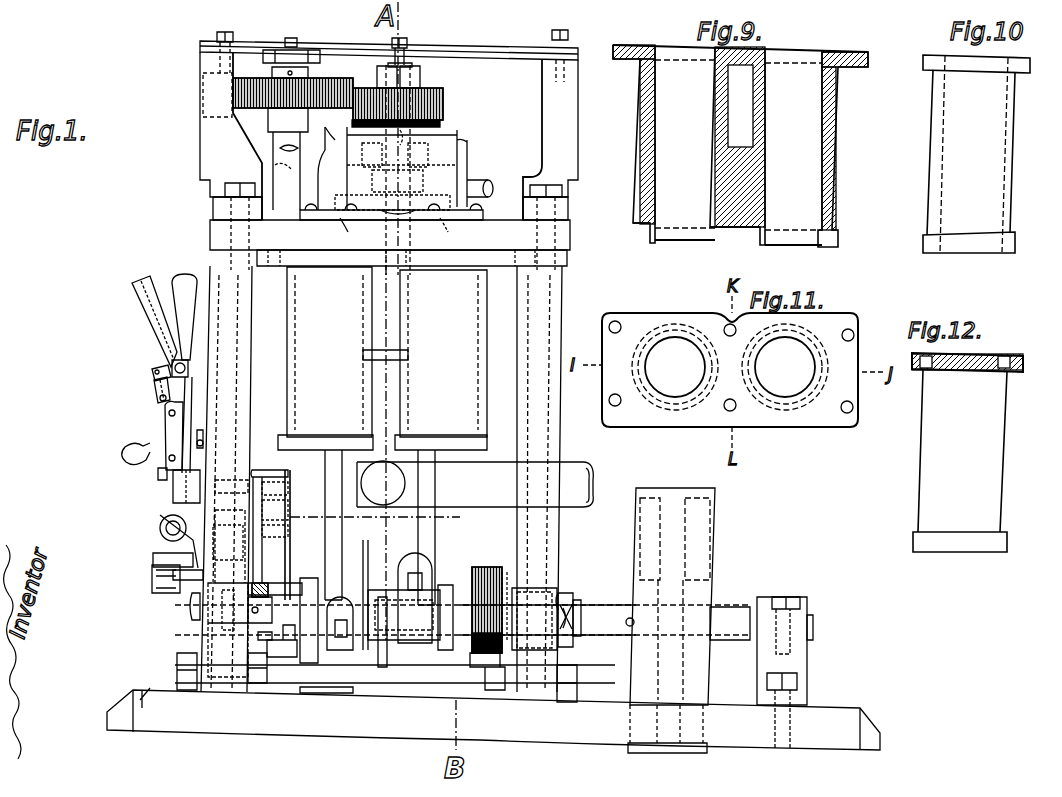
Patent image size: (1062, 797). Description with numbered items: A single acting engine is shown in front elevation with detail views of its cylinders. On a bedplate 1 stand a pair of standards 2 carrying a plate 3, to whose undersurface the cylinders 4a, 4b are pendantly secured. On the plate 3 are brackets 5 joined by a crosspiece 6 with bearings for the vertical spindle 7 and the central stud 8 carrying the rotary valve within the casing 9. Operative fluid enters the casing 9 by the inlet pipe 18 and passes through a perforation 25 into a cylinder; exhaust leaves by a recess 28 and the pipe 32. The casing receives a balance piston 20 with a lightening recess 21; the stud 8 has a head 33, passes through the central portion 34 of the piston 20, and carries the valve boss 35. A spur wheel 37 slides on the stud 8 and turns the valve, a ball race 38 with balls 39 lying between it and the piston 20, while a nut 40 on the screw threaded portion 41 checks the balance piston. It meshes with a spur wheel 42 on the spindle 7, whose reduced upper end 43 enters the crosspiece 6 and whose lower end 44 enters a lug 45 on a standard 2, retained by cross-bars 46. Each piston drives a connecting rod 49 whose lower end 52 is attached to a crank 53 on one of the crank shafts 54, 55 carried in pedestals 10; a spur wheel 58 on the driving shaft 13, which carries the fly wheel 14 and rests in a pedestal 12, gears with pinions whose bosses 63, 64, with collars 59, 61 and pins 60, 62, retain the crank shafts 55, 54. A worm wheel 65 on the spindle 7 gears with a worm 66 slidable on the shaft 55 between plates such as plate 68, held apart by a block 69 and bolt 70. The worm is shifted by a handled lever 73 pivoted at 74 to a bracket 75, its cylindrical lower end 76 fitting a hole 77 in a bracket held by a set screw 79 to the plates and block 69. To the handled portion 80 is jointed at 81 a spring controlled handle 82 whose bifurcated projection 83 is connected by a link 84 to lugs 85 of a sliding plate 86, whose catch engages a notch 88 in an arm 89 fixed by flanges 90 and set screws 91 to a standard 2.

In FIG. 1, the bedplate 1 is at (880, 735).
In FIG. 1, the standards 2 is at (381, 496).
In FIG. 1, the plate 3 is at (217, 232).
In FIG. 1, the cylinder 4a is at (325, 358).
In FIG. 9, the cylinder 4a is at (664, 144).
In FIG. 10, the cylinder 4a is at (976, 154).
In FIG. 1, the cylinder 4b is at (441, 360).
In FIG. 9, the cylinder 4b is at (789, 147).
In FIG. 12, the cylinder 4b is at (967, 452).
In FIG. 1, the brackets 5 is at (389, 136).
In FIG. 1, the crosspiece 6 is at (240, 42).
In FIG. 1, the vertical spindle 7 is at (294, 190).
In FIG. 1, the pin or stud 8 is at (408, 40).
In FIG. 1, the valve casing 9 is at (318, 182).
In FIG. 1, the pedestals 10 is at (227, 618).
In FIG. 1, the third pedestal 12 is at (768, 600).
In FIG. 1, the shaft 13 is at (730, 623).
In FIG. 1, the fly wheel 14 is at (673, 490).
In FIG. 1, the inlet pipe 18 is at (490, 192).
In FIG. 1, the balance piston 20 is at (352, 158).
In FIG. 1, the circular recess 21 is at (395, 155).
In FIG. 1, the perforation 25 is at (347, 234).
In FIG. 1, the recess 28 is at (457, 232).
In FIG. 1, the pipe 32 is at (366, 394).
In FIG. 1, the head 33 is at (398, 224).
In FIG. 1, the central portion 34 is at (407, 133).
In FIG. 1, the boss 35 is at (404, 181).
In FIG. 1, the spur wheel 37 is at (443, 108).
In FIG. 1, the ball race 38 is at (440, 126).
In FIG. 1, the balls 39 is at (329, 124).
In FIG. 1, the nut 40 is at (420, 76).
In FIG. 1, the screw threaded portion 41 is at (412, 66).
In FIG. 1, the spur wheel 42 is at (322, 82).
In FIG. 1, the upper end 43 is at (291, 37).
In FIG. 1, the lower end 44 is at (267, 668).
In FIG. 1, the lug 45 is at (282, 641).
In FIG. 1, the bolts or cross-bars 46 is at (182, 663).
In FIG. 1, the connecting rod 49 is at (335, 518).
In FIG. 1, the lower end 52 is at (434, 622).
In FIG. 1, the cranks 53 is at (380, 595).
In FIG. 1, the crank shaft 54 is at (165, 632).
In FIG. 1, the crank shaft 55 is at (588, 640).
In FIG. 1, the spur wheel 58 is at (482, 567).
In FIG. 1, the collar 59 is at (566, 600).
In FIG. 1, the pin 60 is at (573, 605).
In FIG. 1, the collar 61 is at (270, 634).
In FIG. 1, the pin 62 is at (258, 610).
In FIG. 1, the boss 63 is at (505, 570).
In FIG. 1, the boss 64 is at (262, 472).
In FIG. 1, the worm wheel 65 is at (292, 590).
In FIG. 1, the worm 66 is at (275, 582).
In FIG. 1, the plate 68 is at (290, 531).
In FIG. 1, the block 69 is at (290, 490).
In FIG. 1, the bolt 70 is at (290, 509).
In FIG. 1, the handled lever 73 is at (173, 480).
In FIG. 1, the pivot 74 is at (160, 540).
In FIG. 1, the bracket 75 is at (160, 518).
In FIG. 1, the cylindrical lower end 76 is at (152, 582).
In FIG. 1, the hole 77 is at (190, 600).
In FIG. 1, the set screw 79 is at (223, 544).
In FIG. 1, the handled portion 80 is at (184, 373).
In FIG. 1, the joint 81 is at (185, 360).
In FIG. 1, the spring controlled handle 82 is at (148, 322).
In FIG. 1, the bifurcated projection 83 is at (153, 370).
In FIG. 1, the link 84 is at (155, 388).
In FIG. 1, the lugs 85 is at (160, 398).
In FIG. 1, the sliding plate 86 is at (165, 436).
In FIG. 1, the notches 88 is at (125, 446).
In FIG. 1, the arm or bracket 89 is at (130, 462).
In FIG. 1, the flanges 90 is at (205, 434).
In FIG. 1, the set screws 91 is at (205, 444).